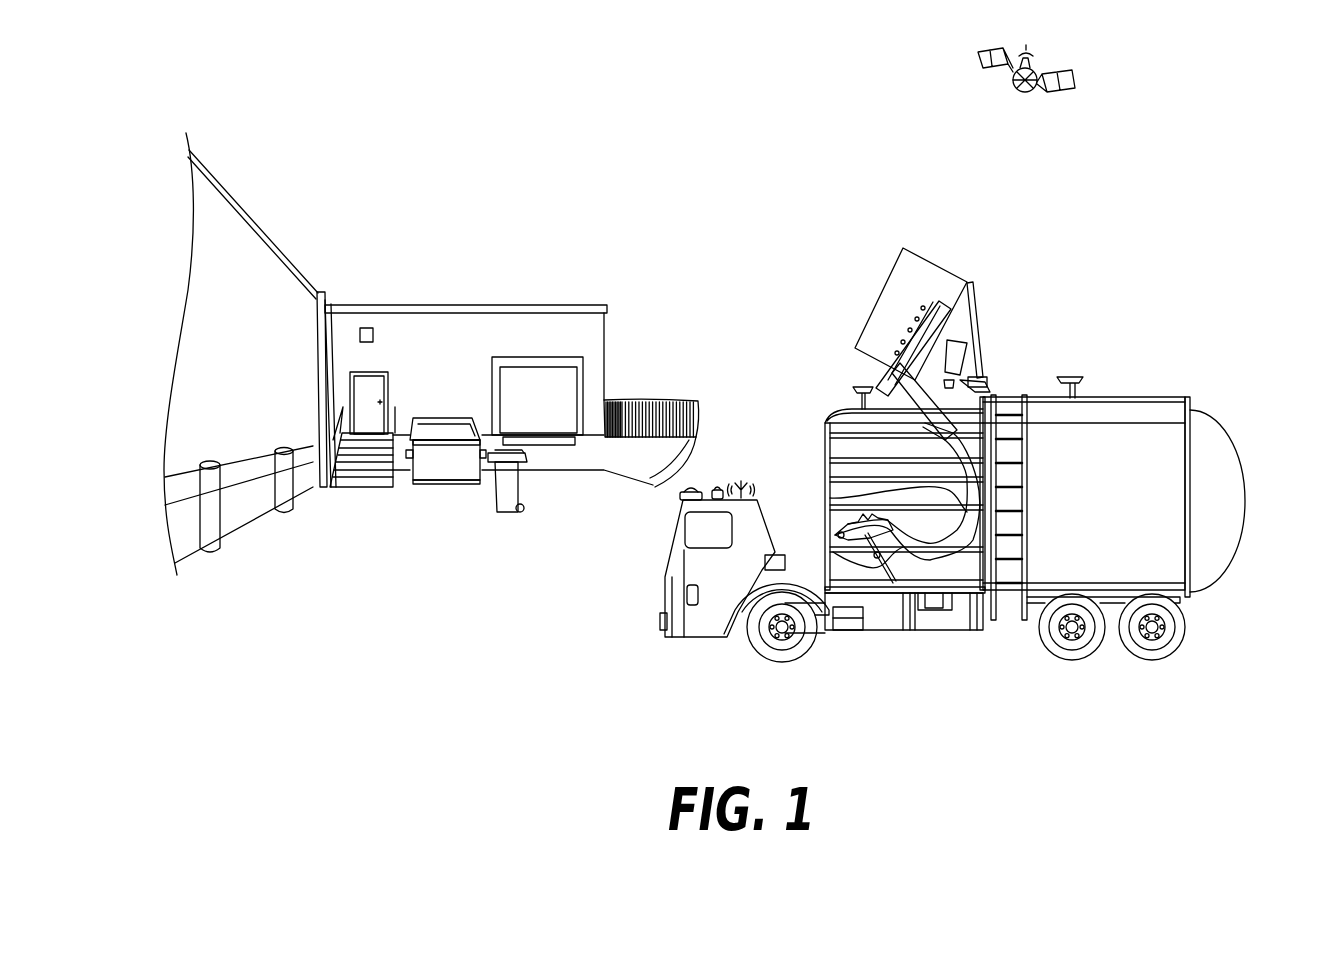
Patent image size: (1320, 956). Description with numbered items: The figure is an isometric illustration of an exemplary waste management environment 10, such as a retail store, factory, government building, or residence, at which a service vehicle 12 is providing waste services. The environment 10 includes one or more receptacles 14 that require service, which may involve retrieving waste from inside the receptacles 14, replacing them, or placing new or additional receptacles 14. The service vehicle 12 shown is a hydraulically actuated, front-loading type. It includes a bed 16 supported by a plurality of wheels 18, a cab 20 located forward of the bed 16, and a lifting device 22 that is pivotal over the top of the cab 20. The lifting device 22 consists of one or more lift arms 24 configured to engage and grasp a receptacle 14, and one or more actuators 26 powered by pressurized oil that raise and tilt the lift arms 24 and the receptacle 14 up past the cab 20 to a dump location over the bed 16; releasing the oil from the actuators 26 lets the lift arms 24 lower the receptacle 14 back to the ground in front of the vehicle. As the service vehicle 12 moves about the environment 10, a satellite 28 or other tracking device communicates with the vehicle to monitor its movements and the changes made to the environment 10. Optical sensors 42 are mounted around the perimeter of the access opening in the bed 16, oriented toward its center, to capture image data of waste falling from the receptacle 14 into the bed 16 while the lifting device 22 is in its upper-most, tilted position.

The waste management environment 10 is at (483, 252).
The service vehicle 12 is at (1093, 331).
The receptacle 14 is at (500, 495).
The bed 16 is at (1113, 520).
The wheels 18 is at (800, 653).
The cab 20 is at (720, 539).
The lifting device 22 is at (913, 565).
The lift arms 24 is at (830, 498).
The actuators 26 is at (970, 390).
The satellite 28 is at (1013, 88).
The optical sensors 42 is at (860, 385).